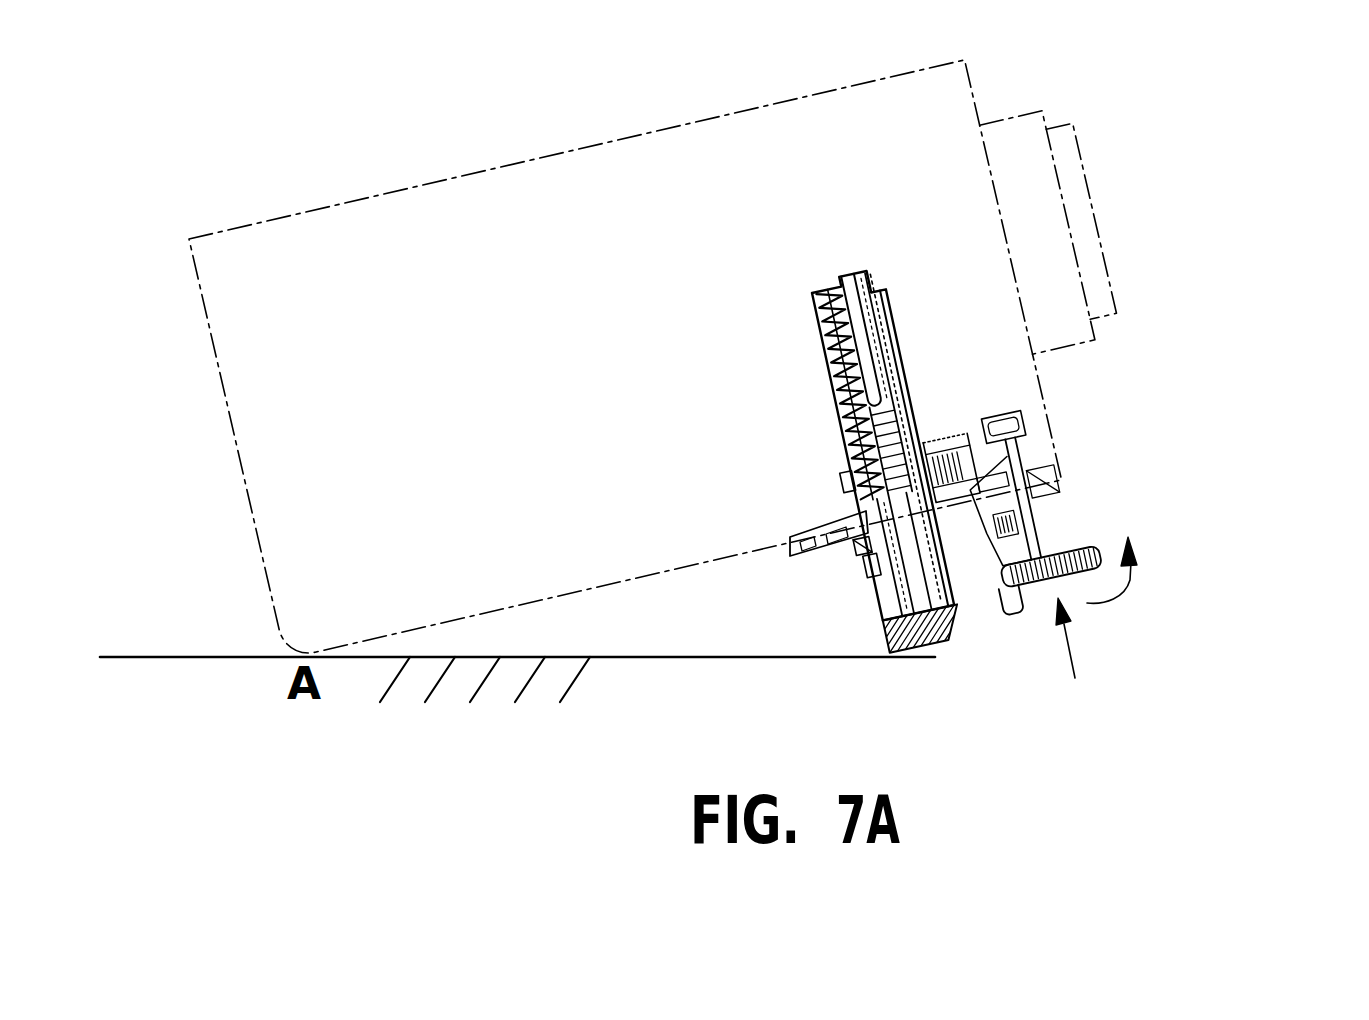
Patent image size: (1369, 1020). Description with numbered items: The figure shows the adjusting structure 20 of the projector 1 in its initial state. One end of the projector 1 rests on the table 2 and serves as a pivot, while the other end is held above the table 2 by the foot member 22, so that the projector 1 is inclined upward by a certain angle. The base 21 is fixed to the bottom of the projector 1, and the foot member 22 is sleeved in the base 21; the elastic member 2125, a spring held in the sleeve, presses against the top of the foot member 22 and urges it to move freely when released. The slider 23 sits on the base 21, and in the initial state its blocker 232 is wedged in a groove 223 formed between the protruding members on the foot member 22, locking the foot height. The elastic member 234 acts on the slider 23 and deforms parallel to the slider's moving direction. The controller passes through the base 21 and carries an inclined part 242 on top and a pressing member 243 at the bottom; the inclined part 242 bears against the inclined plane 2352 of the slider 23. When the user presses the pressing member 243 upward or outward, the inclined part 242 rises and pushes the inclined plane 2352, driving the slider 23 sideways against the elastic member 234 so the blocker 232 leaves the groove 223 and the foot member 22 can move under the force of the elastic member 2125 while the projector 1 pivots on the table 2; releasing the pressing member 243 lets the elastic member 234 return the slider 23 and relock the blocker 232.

The projector 1 is at (447, 172).
The table 2 is at (206, 677).
The adjusting structure 20 is at (1102, 503).
The base 21 is at (790, 541).
The foot member 22 is at (940, 594).
The slider 23 is at (842, 486).
The elastic member 2125 is at (898, 358).
The blocker 232 is at (866, 548).
The groove 223 is at (876, 565).
The elastic member 234 is at (933, 447).
The inclined plane 2352 is at (1015, 420).
The inclined part 242 is at (1028, 445).
The pressing member 243 is at (1043, 596).